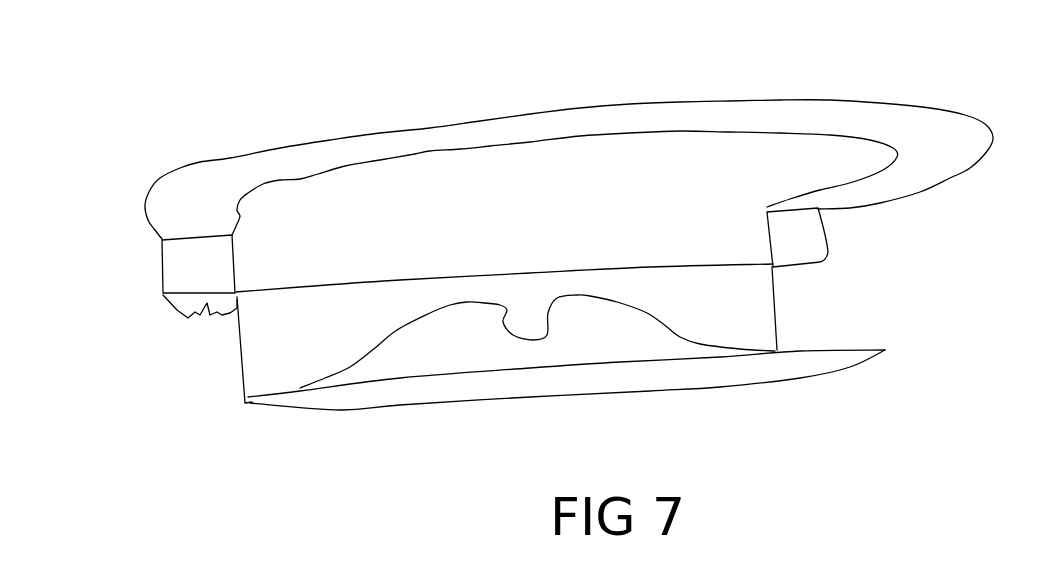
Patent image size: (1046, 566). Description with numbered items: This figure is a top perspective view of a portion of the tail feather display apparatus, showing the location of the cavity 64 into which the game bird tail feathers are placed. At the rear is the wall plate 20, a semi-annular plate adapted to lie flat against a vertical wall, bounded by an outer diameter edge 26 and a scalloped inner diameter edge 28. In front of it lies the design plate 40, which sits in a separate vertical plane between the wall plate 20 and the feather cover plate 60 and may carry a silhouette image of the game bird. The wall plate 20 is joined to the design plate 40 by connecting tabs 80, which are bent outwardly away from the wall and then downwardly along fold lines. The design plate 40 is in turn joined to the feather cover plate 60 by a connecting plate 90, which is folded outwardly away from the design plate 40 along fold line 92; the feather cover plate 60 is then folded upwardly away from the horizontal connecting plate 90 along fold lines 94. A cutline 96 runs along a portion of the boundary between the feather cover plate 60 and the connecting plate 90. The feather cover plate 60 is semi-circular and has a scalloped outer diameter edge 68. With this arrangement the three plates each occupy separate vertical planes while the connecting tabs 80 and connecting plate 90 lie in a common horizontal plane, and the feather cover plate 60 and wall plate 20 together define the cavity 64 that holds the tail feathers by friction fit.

The wall plate 20 is at (218, 193).
The outer diameter edge 26 is at (745, 98).
The inner diameter edge 28 is at (780, 133).
The cavity 64 is at (489, 207).
The connecting tabs 80 is at (857, 240).
The connecting plate 90 is at (757, 297).
The fold line 92 is at (342, 282).
The fold lines 94 is at (755, 345).
The cutline 96 is at (580, 295).
The design plate 40 is at (203, 318).
The feather cover plate 60 is at (730, 365).
The outer diameter edge 68 is at (852, 368).